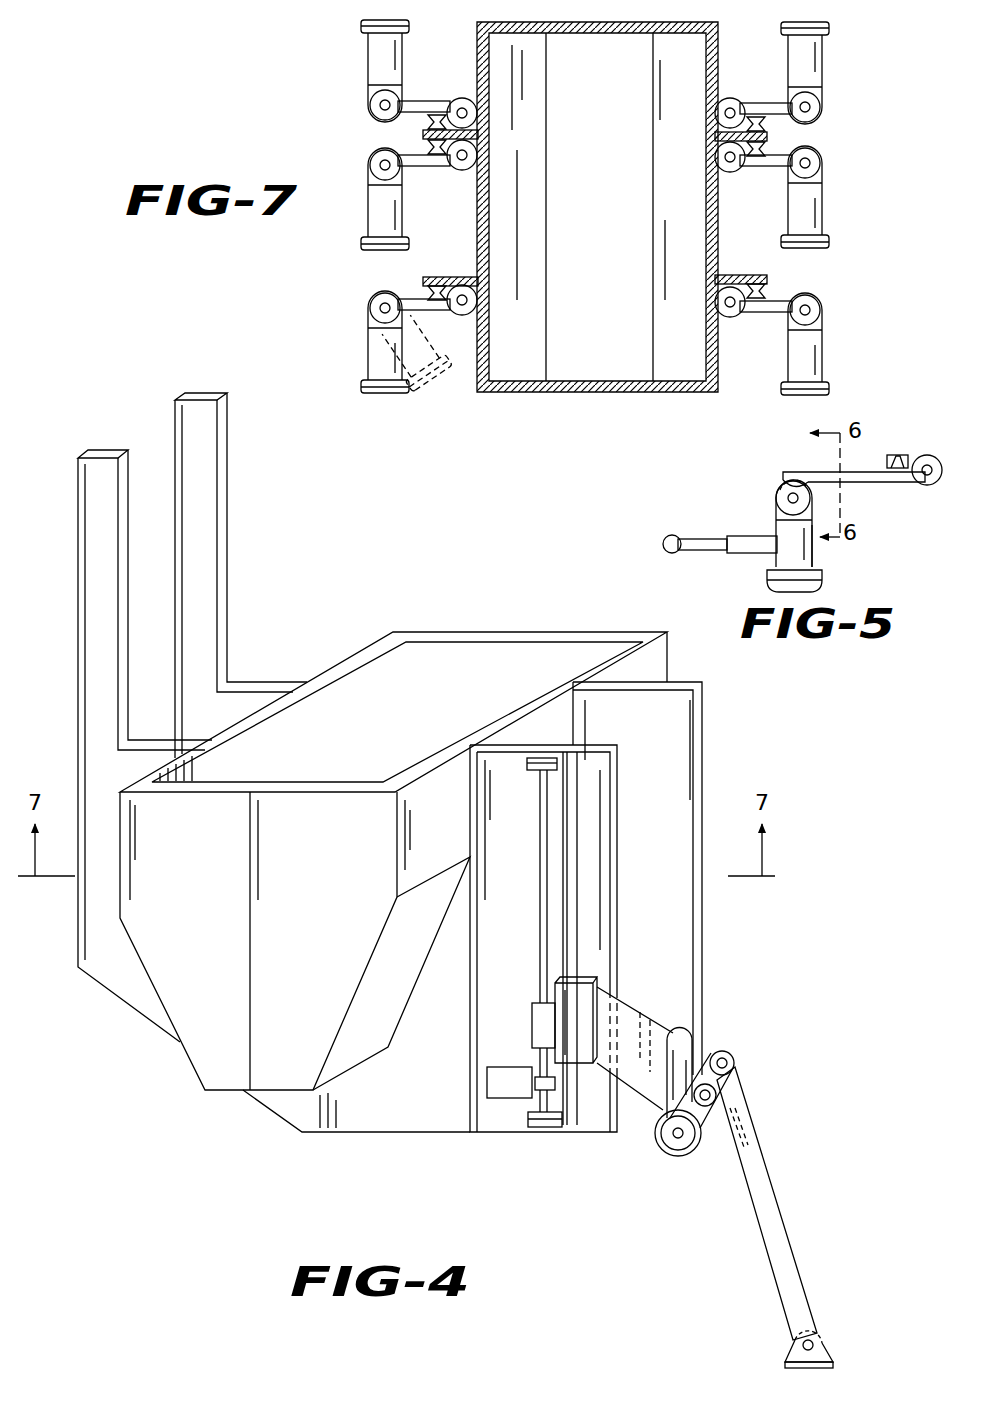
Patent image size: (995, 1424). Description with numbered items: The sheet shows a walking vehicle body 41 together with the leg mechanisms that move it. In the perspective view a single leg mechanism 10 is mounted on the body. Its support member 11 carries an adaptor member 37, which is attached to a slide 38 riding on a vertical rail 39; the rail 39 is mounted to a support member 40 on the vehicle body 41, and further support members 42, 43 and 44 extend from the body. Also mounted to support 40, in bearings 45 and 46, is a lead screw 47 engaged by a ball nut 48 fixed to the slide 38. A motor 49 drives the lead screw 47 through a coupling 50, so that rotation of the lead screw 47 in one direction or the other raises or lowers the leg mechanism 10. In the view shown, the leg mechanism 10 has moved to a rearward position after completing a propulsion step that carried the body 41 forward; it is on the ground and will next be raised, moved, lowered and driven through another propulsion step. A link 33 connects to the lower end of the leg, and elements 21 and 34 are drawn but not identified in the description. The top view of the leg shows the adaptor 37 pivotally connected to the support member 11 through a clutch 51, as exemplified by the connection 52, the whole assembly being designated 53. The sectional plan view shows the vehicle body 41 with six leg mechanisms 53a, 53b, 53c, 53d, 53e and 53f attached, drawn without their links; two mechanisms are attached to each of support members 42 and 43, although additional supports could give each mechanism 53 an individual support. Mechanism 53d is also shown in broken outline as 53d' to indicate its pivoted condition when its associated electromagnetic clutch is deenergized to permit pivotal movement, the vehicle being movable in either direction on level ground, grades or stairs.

In FIG. 4, the leg mechanism 10 is at (747, 1042).
In FIG. 5, the support member 11 is at (813, 562).
In FIG. 4, the support member 11 is at (702, 1038).
In FIG. 5, the piston rod 21 is at (752, 556).
In FIG. 5, the link 33 is at (697, 551).
In FIG. 4, the link 33 is at (780, 1220).
In FIG. 4, the base bracket 34 is at (824, 1352).
In FIG. 5, the adaptor member 37 is at (870, 483).
In FIG. 4, the adaptor member 37 is at (640, 1035).
In FIG. 4, the slide 38 is at (572, 998).
In FIG. 4, the vertical rail 39 is at (567, 925).
In FIG. 7, the support member 40 is at (768, 279).
In FIG. 4, the support member 40 is at (593, 830).
In FIG. 7, the vehicle body 41 is at (578, 392).
In FIG. 4, the vehicle body 41 is at (487, 637).
In FIG. 7, the support member 42 is at (768, 136).
In FIG. 4, the support member 42 is at (705, 688).
In FIG. 7, the support member 43 is at (452, 140).
In FIG. 4, the support member 43 is at (238, 688).
In FIG. 7, the support member 44 is at (452, 276).
In FIG. 4, the support member 44 is at (108, 973).
In FIG. 4, the bearing 45 is at (533, 771).
In FIG. 4, the bearing 46 is at (533, 1128).
In FIG. 5, the lead screw 47 is at (896, 453).
In FIG. 4, the lead screw 47 is at (540, 883).
In FIG. 4, the ball nut 48 is at (536, 1022).
In FIG. 5, the motor 49 is at (925, 486).
In FIG. 4, the motor 49 is at (488, 1078).
In FIG. 4, the coupling 50 is at (543, 1076).
In FIG. 5, the clutch 51 is at (776, 503).
In FIG. 5, the connection 52 is at (790, 495).
In FIG. 5, the leg mechanism assembly 53 is at (727, 496).
In FIG. 7, the leg mechanism 53a is at (860, 334).
In FIG. 7, the leg mechanism 53b is at (857, 188).
In FIG. 7, the leg mechanism 53c is at (848, 56).
In FIG. 7, the leg mechanism 53d is at (376, 342).
In FIG. 7, the leg mechanism in pivoted condition 53d' is at (425, 373).
In FIG. 7, the leg mechanism 53e is at (356, 222).
In FIG. 7, the leg mechanism 53f is at (360, 63).